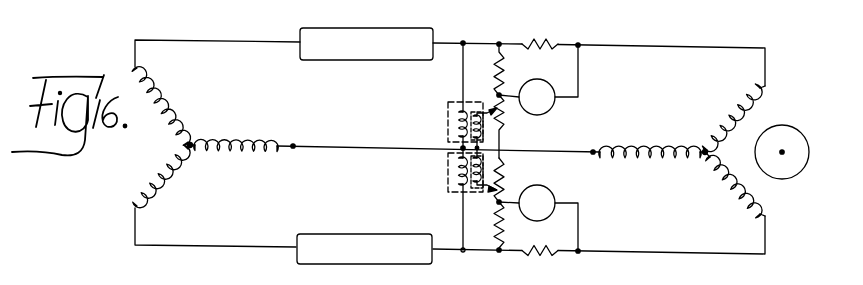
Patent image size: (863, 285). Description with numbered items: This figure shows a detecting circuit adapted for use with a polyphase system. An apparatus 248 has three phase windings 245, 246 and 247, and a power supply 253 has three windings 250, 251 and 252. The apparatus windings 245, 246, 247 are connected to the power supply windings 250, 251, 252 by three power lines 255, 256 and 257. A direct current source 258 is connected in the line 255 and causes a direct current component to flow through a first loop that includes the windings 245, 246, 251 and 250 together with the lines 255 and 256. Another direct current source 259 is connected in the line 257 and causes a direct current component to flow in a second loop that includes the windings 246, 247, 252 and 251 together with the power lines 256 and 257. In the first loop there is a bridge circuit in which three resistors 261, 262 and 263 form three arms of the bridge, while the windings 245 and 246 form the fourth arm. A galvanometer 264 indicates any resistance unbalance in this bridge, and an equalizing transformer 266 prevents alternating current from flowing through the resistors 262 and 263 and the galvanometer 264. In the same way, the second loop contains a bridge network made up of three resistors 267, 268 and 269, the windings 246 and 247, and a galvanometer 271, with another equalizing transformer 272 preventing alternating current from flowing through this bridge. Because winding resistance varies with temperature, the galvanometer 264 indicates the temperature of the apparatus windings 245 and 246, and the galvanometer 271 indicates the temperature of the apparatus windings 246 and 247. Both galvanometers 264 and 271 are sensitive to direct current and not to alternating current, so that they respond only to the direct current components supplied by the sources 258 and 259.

The phase winding 245 is at (742, 104).
The phase winding 246 is at (665, 137).
The phase winding 247 is at (740, 200).
The apparatus 248 is at (786, 183).
The power supply winding 250 is at (163, 104).
The power supply winding 251 is at (240, 140).
The power supply winding 252 is at (172, 178).
The power supply 253 is at (162, 139).
The power line 255 is at (222, 28).
The power line 256 is at (340, 133).
The power line 257 is at (238, 244).
The direct current source 258 is at (340, 60).
The direct current source 259 is at (339, 233).
The resistor 261 is at (541, 42).
The resistor 262 is at (497, 68).
The resistor 263 is at (500, 127).
The galvanometer 264 is at (558, 92).
The equalizing transformer 266 is at (448, 118).
The resistor 267 is at (556, 250).
The resistor 268 is at (497, 222).
The resistor 269 is at (500, 176).
The galvanometer 271 is at (560, 195).
The equalizing transformer 272 is at (448, 170).